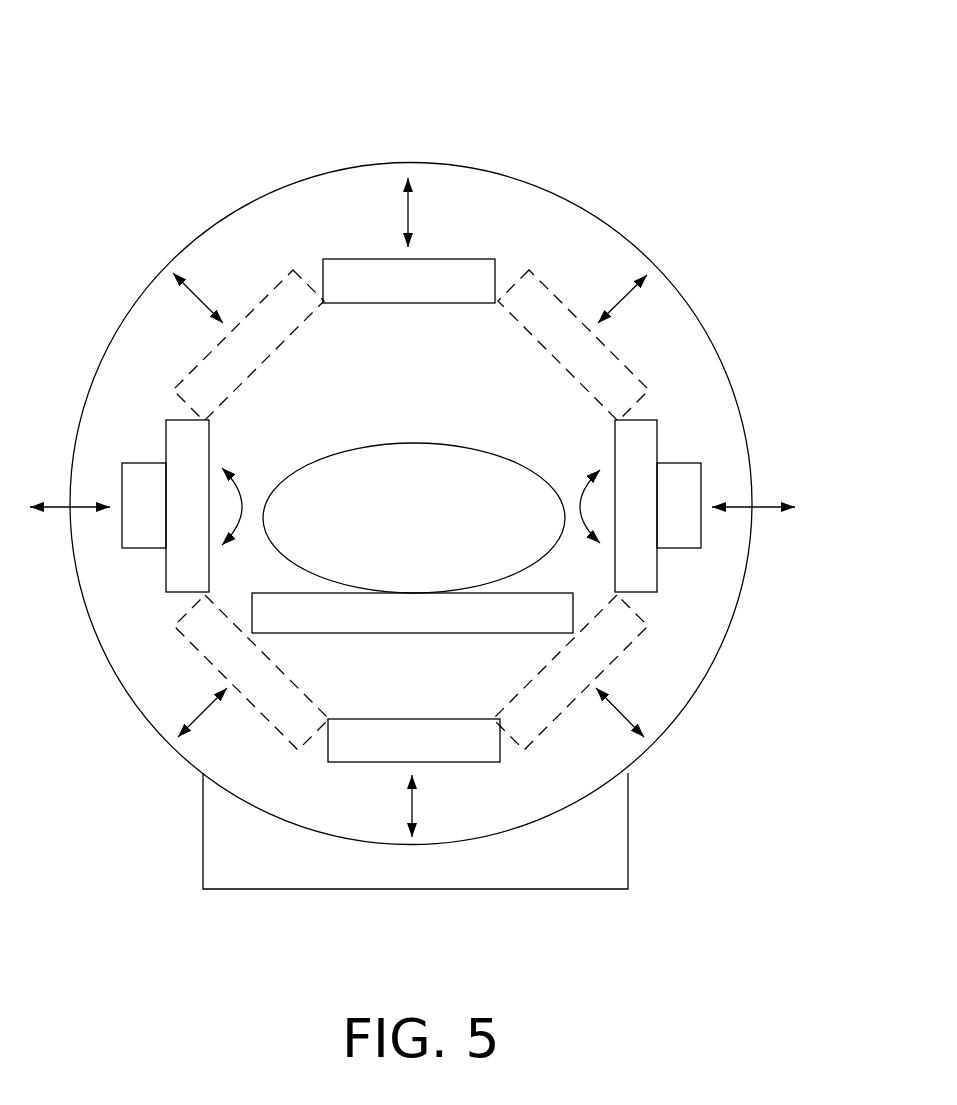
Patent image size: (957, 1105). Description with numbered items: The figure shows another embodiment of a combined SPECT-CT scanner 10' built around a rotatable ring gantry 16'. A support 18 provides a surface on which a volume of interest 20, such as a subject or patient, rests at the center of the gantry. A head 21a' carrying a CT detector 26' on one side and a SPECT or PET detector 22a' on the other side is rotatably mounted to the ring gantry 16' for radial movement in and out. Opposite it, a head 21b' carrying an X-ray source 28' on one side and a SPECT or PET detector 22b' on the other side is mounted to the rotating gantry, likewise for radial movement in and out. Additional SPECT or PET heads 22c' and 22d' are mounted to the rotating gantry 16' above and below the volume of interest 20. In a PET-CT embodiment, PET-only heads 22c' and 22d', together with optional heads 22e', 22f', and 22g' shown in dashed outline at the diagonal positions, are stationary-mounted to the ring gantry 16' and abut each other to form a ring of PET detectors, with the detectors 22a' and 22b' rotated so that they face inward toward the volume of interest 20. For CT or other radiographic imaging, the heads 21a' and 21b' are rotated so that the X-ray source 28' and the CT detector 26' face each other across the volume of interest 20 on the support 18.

The lighting assembly 10' is at (512, 451).
The rotatable ring gantry 16' is at (411, 502).
The support 18 is at (397, 627).
The volume of interest 20 is at (397, 533).
The head 21a' is at (742, 609).
The head 21b' is at (77, 611).
The SPECT or PET detector 22a' is at (585, 499).
The SPECT or PET detector 22b' is at (240, 498).
The SPECT or PET head 22c' is at (409, 281).
The SPECT or PET head 22d' is at (414, 740).
The PET-only head 22e' is at (602, 345).
The PET-only head 22f' is at (570, 680).
The PET-only head 22g' is at (222, 516).
The CT detector 26' is at (698, 488).
The X-ray source 28' is at (129, 490).